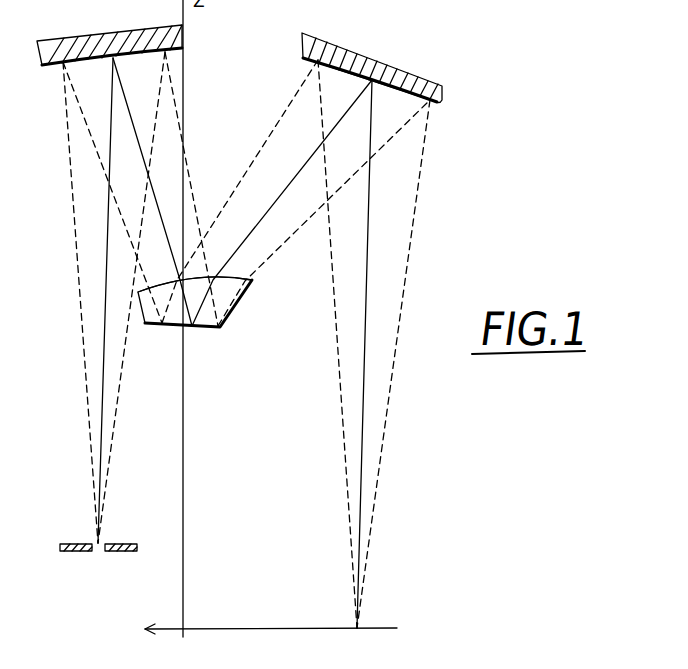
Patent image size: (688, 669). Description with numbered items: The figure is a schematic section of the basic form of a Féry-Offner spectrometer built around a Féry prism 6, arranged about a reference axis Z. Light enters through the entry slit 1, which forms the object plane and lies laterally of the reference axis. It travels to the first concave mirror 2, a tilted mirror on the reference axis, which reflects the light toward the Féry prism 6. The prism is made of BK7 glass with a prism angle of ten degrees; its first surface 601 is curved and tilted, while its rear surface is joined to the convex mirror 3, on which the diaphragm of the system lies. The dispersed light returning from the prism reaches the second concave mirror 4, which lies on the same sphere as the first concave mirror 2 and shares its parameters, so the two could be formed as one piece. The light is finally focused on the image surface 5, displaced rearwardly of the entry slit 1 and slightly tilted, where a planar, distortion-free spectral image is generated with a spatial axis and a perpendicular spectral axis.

The entry slit 1 is at (117, 553).
The first concave mirror 2 is at (94, 36).
The convex mirror 3 is at (223, 317).
The second concave mirror 4 is at (378, 52).
The image surface 5 is at (263, 625).
The Féry prism 6 is at (245, 303).
The first surface of the Féry prism 601 is at (233, 271).